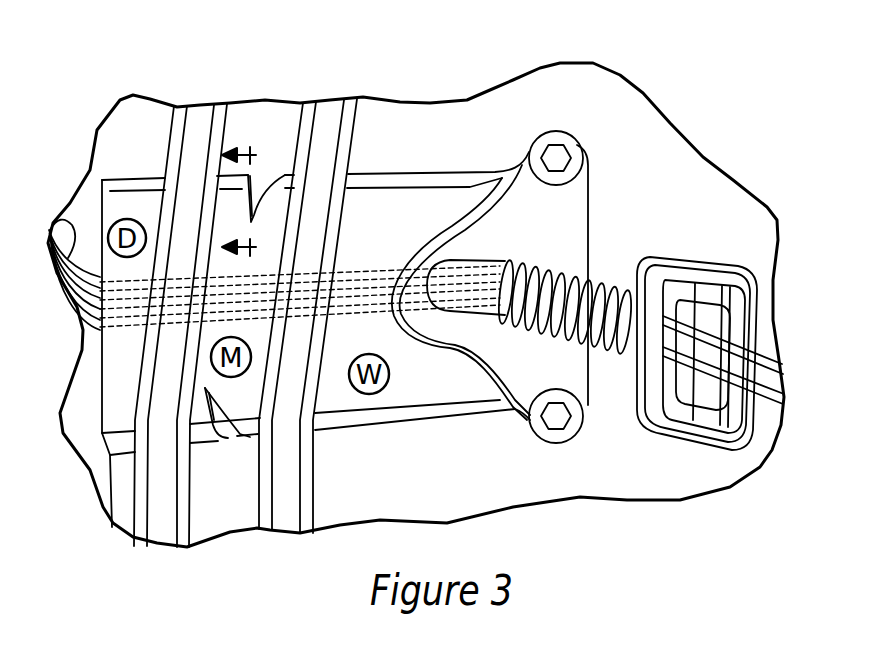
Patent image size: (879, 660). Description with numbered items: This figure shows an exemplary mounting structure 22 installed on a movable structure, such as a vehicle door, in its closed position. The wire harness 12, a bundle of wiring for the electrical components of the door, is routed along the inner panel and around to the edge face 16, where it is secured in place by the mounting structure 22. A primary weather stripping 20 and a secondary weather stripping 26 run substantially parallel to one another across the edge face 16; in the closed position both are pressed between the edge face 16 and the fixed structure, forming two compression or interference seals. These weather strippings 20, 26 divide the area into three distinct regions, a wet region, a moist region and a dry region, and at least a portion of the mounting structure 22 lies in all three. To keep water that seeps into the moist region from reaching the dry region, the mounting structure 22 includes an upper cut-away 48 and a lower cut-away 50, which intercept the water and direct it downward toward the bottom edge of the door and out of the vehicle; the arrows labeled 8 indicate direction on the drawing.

The direction of movement 8 is at (240, 202).
The wire harness 12 is at (73, 240).
The edge face 16 is at (454, 482).
The primary weather stripping 20 is at (327, 128).
The mounting structure 22 is at (426, 165).
The secondary weather stripping 26 is at (202, 130).
The upper cut-away 48 is at (266, 175).
The lower cut-away 50 is at (227, 445).